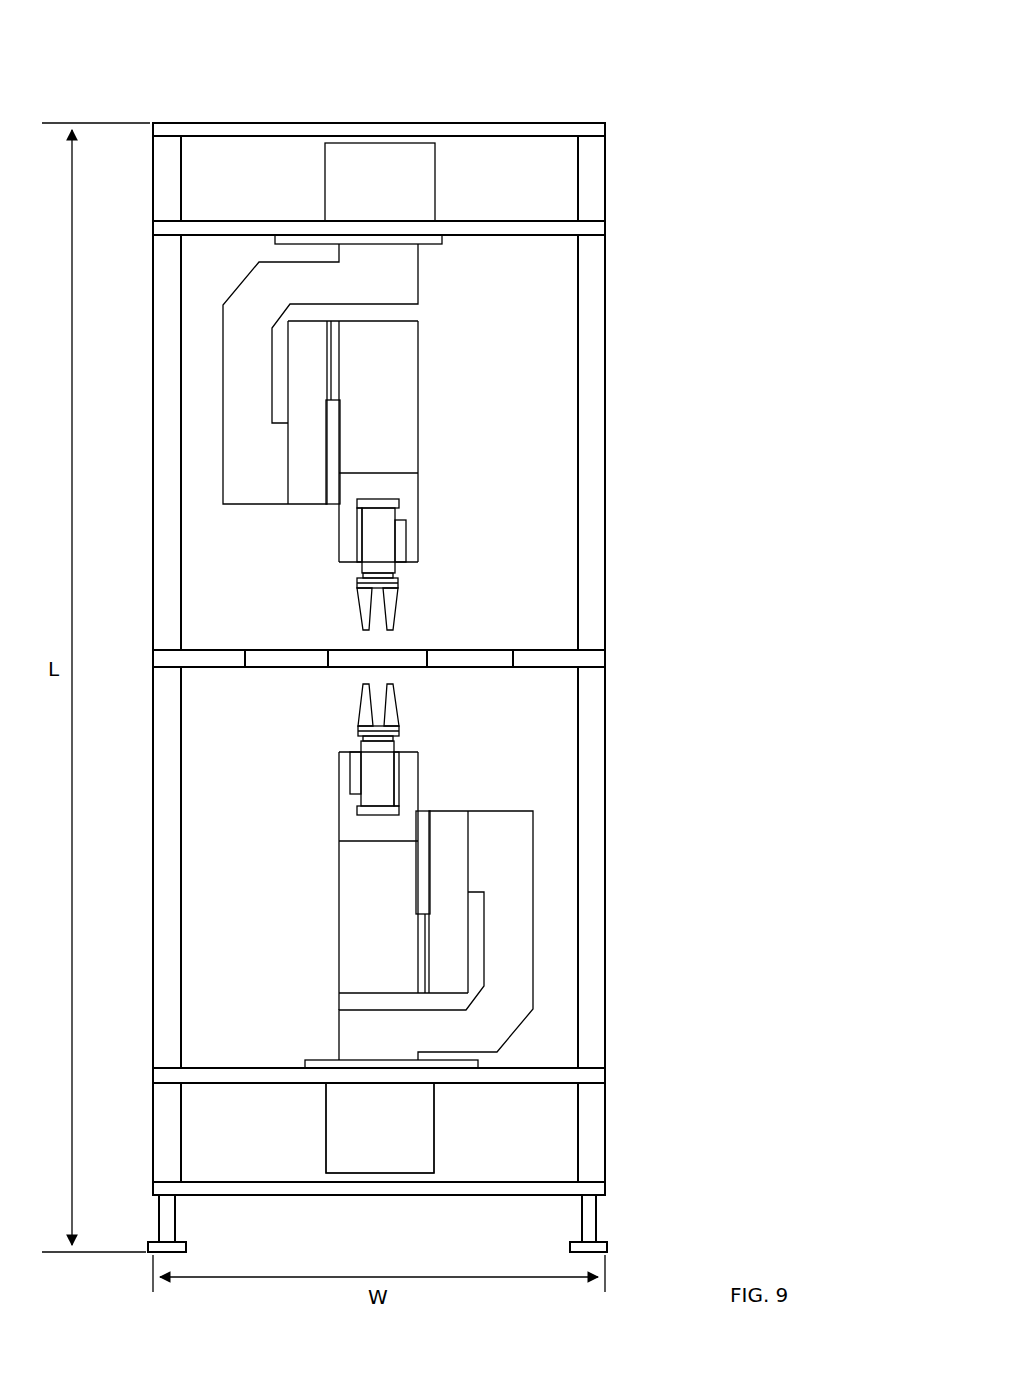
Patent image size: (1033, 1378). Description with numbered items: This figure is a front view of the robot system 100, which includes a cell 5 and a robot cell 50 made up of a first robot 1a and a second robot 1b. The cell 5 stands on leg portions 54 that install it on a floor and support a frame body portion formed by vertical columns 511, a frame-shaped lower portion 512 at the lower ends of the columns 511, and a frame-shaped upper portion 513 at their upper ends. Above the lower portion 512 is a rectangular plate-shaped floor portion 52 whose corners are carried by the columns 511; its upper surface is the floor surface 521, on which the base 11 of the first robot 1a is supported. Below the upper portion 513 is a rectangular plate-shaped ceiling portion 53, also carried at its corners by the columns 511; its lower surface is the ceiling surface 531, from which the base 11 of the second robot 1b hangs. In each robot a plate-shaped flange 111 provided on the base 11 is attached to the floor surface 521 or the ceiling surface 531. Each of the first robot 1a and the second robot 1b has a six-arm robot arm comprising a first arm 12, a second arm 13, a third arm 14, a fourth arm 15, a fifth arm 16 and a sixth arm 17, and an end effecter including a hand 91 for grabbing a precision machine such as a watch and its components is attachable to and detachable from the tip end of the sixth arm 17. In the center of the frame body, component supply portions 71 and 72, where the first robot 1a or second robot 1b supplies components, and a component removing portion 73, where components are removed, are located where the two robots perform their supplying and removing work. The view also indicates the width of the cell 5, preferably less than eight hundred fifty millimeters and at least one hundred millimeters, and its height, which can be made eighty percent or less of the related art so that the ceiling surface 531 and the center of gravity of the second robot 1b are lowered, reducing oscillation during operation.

The robot system 100 is at (616, 76).
The cell 5 is at (608, 177).
The robot cell 50 is at (608, 128).
The ceiling portion 53 is at (536, 230).
The ceiling surface 531 is at (484, 236).
The floor portion 52 is at (538, 1073).
The floor surface 521 is at (215, 1067).
The lower portion 512 is at (435, 1188).
The upper portion 513 is at (335, 130).
The column 511 is at (588, 743).
The leg portion 54 is at (163, 1213).
The component supply portion 71 is at (205, 648).
The component supply portion 72 is at (350, 648).
The component removing portion 73 is at (550, 650).
The first robot 1a is at (312, 1120).
The second robot 1b is at (452, 182).
The base 11 is at (378, 160).
The flange 111 is at (298, 238).
The first arm 12 is at (248, 380).
The second arm 13 is at (308, 490).
The third arm 14 is at (403, 370).
The fourth arm 15 is at (405, 490).
The fifth arm 16 is at (383, 548).
The sixth arm 17 is at (399, 584).
The hand 91 is at (399, 608).